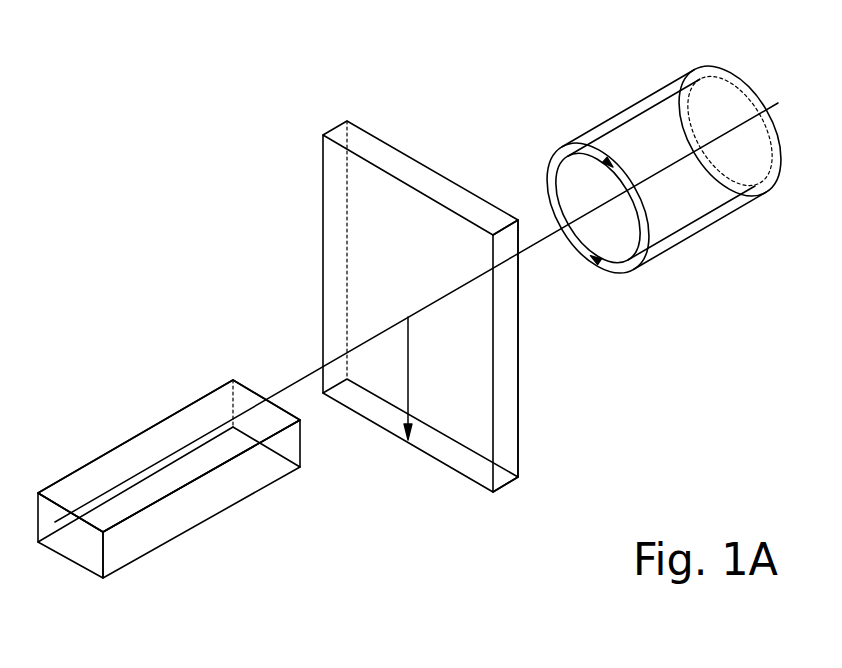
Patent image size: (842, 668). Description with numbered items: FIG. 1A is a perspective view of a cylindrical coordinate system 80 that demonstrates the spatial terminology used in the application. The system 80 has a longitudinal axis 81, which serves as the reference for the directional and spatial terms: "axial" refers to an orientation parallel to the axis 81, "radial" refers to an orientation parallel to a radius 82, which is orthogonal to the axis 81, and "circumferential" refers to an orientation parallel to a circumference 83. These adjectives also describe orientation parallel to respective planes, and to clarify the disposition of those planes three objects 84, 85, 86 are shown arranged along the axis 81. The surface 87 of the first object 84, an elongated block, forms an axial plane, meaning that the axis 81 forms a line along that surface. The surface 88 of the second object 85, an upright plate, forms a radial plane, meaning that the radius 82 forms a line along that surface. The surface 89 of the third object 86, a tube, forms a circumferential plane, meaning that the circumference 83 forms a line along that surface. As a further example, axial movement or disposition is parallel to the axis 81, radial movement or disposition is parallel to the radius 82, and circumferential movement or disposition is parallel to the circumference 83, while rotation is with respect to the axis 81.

The cylindrical coordinate system 80 is at (268, 175).
The longitudinal axis 81 is at (770, 103).
The radius 82 is at (408, 372).
The circumference 83 is at (547, 168).
The object 84 is at (130, 563).
The object 85 is at (533, 487).
The object 86 is at (700, 247).
The surface 87 is at (127, 458).
The surface 88 is at (337, 262).
The surface 89 is at (628, 103).